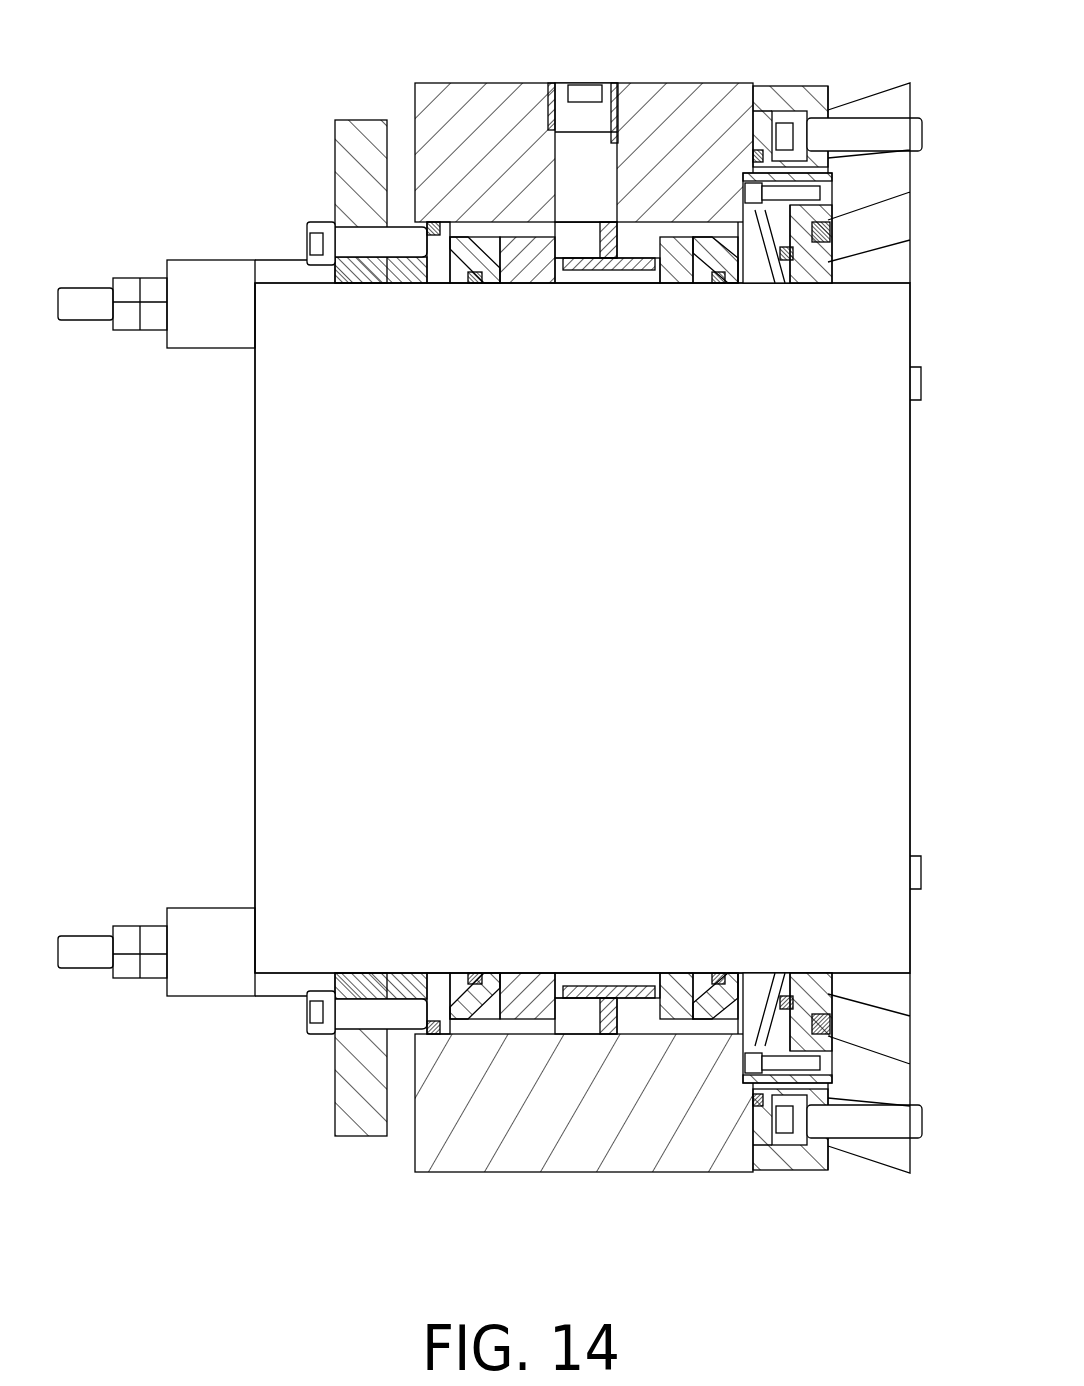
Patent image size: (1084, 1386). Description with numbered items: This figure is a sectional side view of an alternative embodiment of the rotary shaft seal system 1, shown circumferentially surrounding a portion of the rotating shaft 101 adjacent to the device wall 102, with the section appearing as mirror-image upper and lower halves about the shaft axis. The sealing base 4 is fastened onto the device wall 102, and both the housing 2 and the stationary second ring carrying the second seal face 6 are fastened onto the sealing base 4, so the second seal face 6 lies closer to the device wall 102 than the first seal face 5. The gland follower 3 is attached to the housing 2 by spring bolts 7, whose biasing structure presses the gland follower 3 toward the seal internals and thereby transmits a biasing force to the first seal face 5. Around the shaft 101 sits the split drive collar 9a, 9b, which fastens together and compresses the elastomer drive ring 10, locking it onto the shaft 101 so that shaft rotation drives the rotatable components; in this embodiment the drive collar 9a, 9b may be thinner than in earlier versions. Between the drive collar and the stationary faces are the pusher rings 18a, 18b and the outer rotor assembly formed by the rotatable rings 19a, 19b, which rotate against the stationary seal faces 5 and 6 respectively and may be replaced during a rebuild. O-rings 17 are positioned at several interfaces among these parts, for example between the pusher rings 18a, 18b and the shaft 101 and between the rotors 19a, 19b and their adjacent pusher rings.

The rotary shaft seal system 1 is at (160, 110).
The housing 2 is at (500, 106).
The gland follower 3 is at (362, 136).
The sealing base 4 is at (770, 106).
The first seal face 5 is at (412, 270).
The second seal face 6 is at (760, 268).
The spring bolts 7 is at (158, 372).
The drive collar 9a is at (573, 258).
The drive collar 9b is at (628, 265).
The drive ring 10 is at (610, 276).
The sealing ring (O-ring) 17 is at (427, 224).
The pusher ring 18a is at (525, 284).
The pusher ring 18b is at (675, 284).
The rotatable ring 19a is at (462, 242).
The rotatable ring 19b is at (734, 285).
The rotating shaft 101 is at (619, 627).
The device wall 102 is at (873, 88).